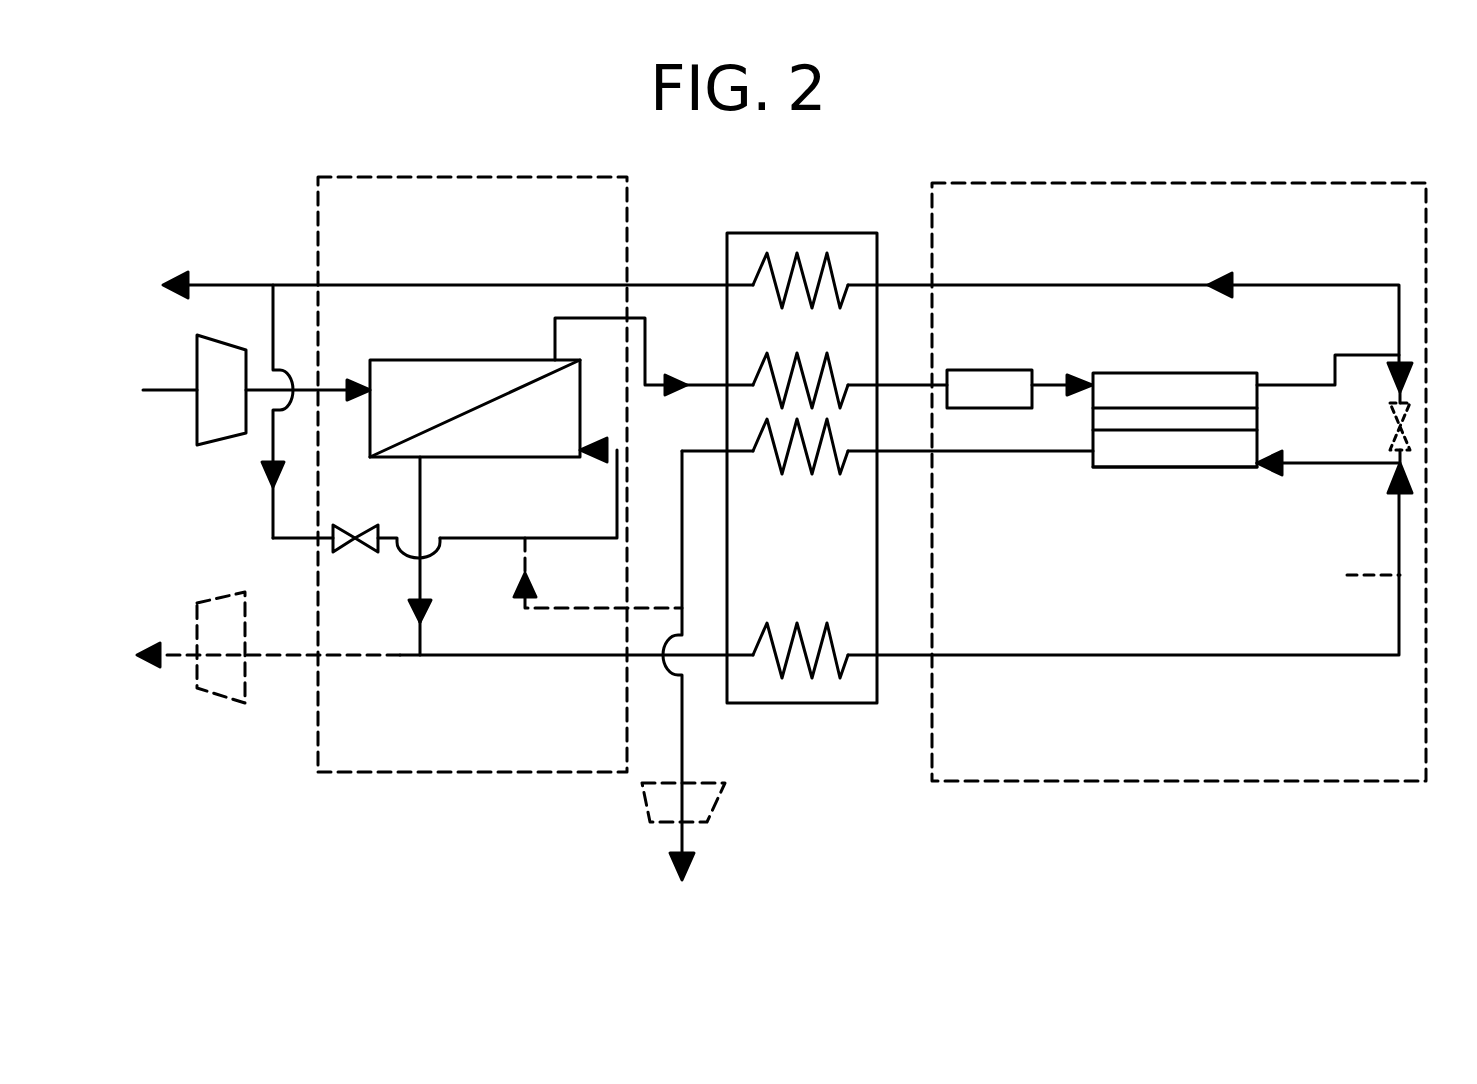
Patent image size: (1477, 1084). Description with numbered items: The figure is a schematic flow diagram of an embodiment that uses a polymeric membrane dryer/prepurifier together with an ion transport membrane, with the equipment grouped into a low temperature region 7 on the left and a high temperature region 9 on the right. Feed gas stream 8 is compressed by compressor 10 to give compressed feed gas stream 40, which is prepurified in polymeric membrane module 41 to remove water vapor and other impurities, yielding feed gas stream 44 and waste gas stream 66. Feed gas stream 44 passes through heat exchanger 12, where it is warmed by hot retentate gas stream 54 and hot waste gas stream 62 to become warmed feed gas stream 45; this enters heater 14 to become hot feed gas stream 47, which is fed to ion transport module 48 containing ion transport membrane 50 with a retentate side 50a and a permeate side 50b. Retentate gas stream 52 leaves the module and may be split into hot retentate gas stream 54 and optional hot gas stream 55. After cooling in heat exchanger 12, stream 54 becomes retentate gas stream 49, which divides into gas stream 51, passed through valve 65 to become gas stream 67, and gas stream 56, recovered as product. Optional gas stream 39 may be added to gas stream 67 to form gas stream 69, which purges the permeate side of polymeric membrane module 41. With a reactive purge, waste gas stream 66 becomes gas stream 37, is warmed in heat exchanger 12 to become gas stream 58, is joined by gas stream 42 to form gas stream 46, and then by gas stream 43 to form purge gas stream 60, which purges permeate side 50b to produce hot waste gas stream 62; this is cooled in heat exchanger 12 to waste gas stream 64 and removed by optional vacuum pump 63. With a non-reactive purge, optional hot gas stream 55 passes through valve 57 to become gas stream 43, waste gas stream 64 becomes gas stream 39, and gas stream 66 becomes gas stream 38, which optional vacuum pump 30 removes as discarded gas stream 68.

The low temperature region 7 is at (472, 775).
The feed gas stream 8 is at (172, 390).
The high temperature region 9 is at (1270, 785).
The compressor 10 is at (225, 445).
The heat exchanger 12 is at (805, 703).
The heater 14 is at (988, 370).
The optional vacuum pump 30 is at (225, 703).
The gas stream 37 is at (508, 655).
The gas stream 38 is at (343, 660).
The optional gas stream 39 is at (525, 550).
The compressed feed gas stream 40 is at (260, 368).
The polymeric membrane module 41 is at (535, 457).
The gas stream 42 is at (1375, 580).
The gas stream 43 is at (1405, 460).
The feed gas stream 44 is at (553, 338).
The warmed feed gas stream 45 is at (905, 377).
The gas stream 46 is at (1398, 512).
The hot feed gas stream 47 is at (1052, 380).
The ion transport module 48 is at (1205, 372).
The retentate gas stream 49 is at (398, 284).
The ion transport membrane 50 is at (1093, 418).
The retentate side 50a is at (1125, 405).
The permeate side 50b is at (1190, 433).
The gas stream 51 is at (272, 518).
The retentate gas stream 52 is at (1290, 385).
The hot retentate gas stream 54 is at (1088, 287).
The optional hot gas stream 55 is at (1405, 395).
The gas stream 56 is at (263, 283).
The valve 57 is at (1428, 427).
The gas stream 58 is at (995, 655).
The purge gas stream 60 is at (1325, 465).
The hot waste gas stream 62 is at (1025, 455).
The optional vacuum pump 63 is at (735, 812).
The waste gas stream 64 is at (712, 450).
The valve 65 is at (352, 552).
The waste gas stream 66 is at (425, 635).
The gas stream 67 is at (455, 538).
The gas stream 68 is at (166, 678).
The gas stream 69 is at (597, 538).